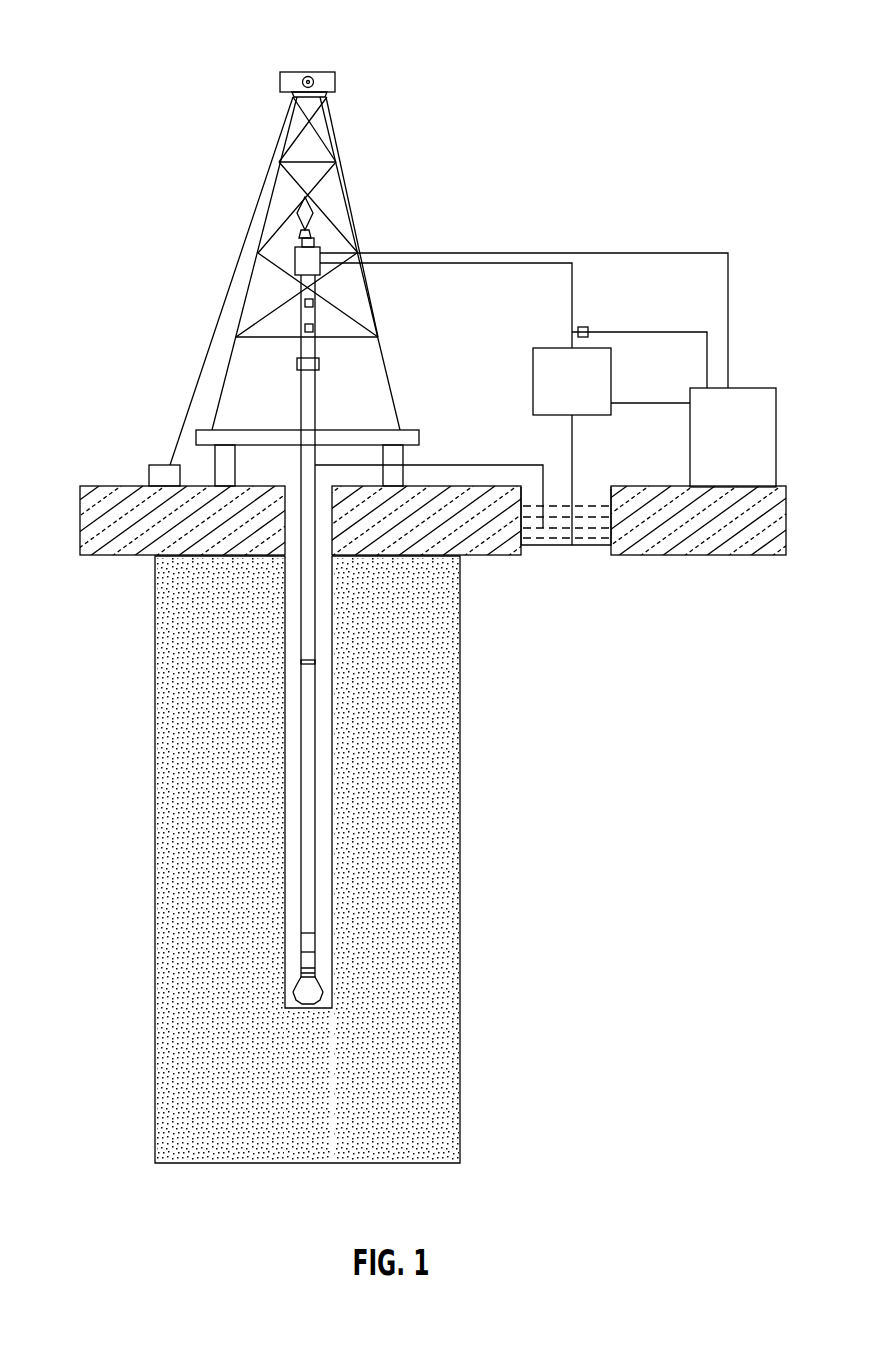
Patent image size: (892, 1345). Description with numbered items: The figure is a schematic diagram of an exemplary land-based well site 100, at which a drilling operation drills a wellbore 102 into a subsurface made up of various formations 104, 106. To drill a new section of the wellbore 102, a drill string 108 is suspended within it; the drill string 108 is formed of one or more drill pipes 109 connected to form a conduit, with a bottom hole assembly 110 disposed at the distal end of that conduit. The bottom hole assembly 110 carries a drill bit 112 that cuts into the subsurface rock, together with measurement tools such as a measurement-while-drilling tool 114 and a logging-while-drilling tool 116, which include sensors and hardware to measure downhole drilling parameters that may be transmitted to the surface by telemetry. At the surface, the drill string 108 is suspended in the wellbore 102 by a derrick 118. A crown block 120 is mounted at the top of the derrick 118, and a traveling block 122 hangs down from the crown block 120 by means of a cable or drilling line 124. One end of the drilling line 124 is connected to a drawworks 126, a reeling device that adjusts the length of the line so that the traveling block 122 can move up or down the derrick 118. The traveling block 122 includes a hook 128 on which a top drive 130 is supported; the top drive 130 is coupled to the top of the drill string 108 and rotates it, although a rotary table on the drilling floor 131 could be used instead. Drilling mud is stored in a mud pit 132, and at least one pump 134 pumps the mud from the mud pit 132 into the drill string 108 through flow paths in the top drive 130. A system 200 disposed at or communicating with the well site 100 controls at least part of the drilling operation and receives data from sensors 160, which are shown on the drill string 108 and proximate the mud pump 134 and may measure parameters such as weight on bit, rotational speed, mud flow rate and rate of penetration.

The well site 100 is at (338, 108).
The wellbore 102 is at (322, 690).
The formation 104 is at (447, 613).
The formation 106 is at (447, 873).
The drill string 108 is at (300, 832).
The drill pipe 109 is at (300, 643).
The bottom hole assembly 110 is at (300, 945).
The drill bit 112 is at (320, 995).
The measurement-while-drilling tool 114 is at (316, 945).
The logging-while-drilling tool 116 is at (316, 968).
The derrick 118 is at (348, 187).
The crown block 120 is at (306, 72).
The traveling block 122 is at (310, 220).
The drilling line 124 is at (318, 148).
The drawworks 126 is at (165, 465).
The hook 128 is at (300, 238).
The top drive 130 is at (295, 262).
The drilling floor 131 is at (333, 430).
The mud pit 132 is at (611, 487).
The pump 134 is at (612, 370).
The sensor 160 is at (313, 303).
The system 200 is at (752, 388).